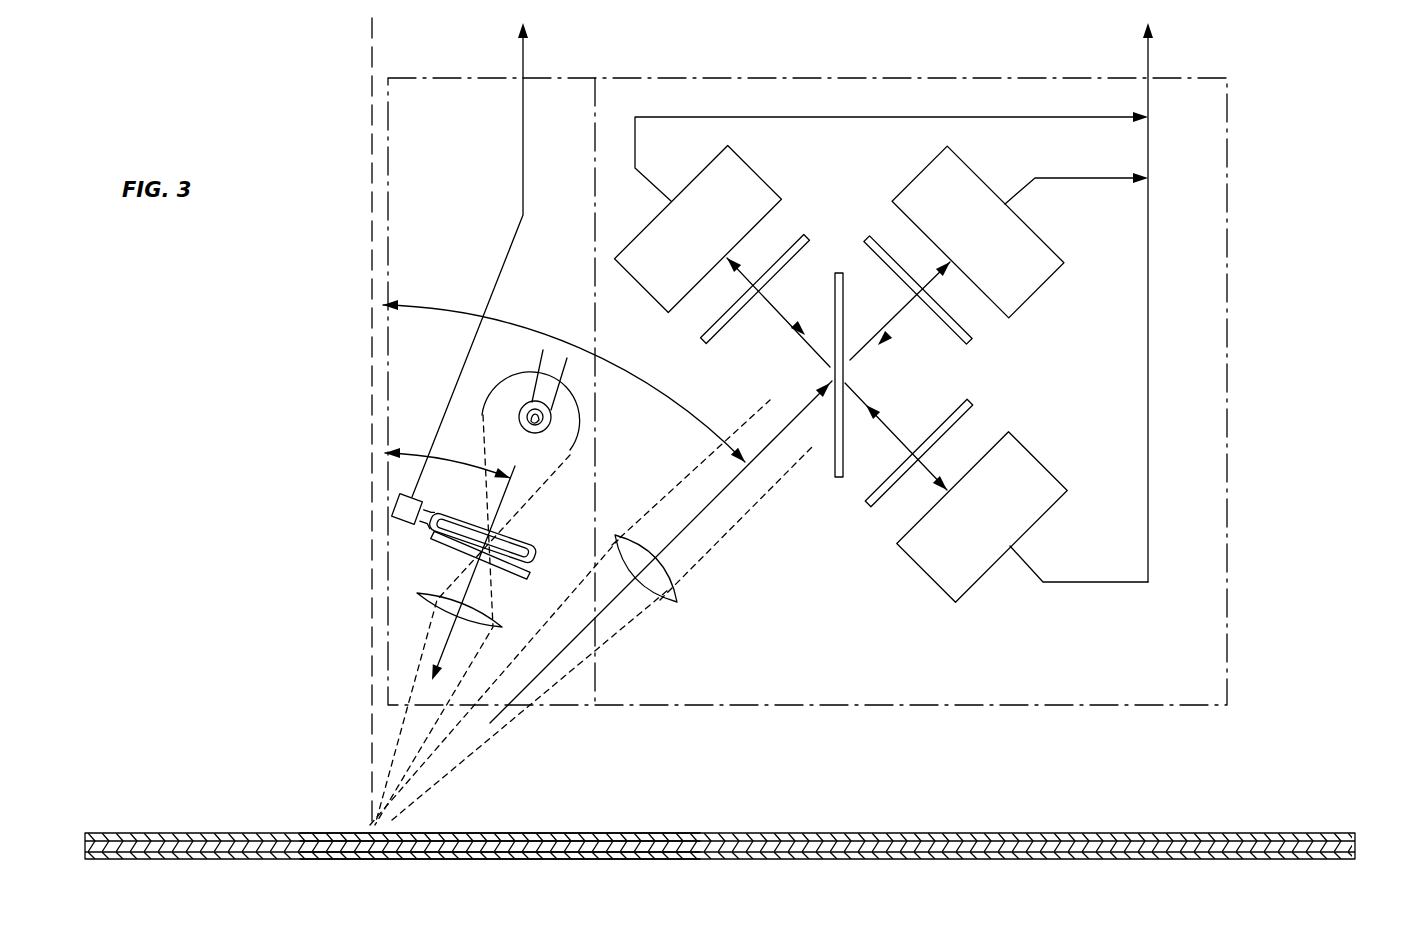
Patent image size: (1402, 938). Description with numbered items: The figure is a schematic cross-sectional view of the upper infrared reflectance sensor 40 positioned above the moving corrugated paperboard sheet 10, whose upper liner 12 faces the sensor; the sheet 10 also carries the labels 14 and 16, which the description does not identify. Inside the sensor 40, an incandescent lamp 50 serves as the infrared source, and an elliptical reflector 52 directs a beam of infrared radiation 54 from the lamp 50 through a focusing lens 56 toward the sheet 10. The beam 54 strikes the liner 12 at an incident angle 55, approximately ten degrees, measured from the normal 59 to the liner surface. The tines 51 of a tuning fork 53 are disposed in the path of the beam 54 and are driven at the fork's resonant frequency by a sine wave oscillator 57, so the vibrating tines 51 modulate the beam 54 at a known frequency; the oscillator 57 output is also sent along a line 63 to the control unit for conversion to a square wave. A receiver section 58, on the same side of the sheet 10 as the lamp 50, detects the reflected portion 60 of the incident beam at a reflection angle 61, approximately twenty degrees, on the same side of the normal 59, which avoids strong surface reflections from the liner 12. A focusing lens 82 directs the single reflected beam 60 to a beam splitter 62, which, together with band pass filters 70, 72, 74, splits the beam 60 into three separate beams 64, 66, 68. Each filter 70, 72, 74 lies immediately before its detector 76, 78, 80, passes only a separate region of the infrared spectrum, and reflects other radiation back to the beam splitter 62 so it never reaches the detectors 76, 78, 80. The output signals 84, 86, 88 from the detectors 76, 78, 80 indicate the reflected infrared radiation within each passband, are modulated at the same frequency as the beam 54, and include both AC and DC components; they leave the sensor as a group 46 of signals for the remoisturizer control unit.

The corrugated paperboard sheet 10 is at (733, 828).
The upper liner 12 is at (833, 832).
The middle layer of web 14 is at (905, 842).
The bottom layer of web 16 is at (975, 863).
The infrared reflectance sensor 40 is at (1240, 639).
The group of signals 46 is at (1150, 70).
The incandescent lamp 50 is at (552, 418).
The tines 51 is at (530, 535).
The elliptical reflector 52 is at (517, 392).
The tuning fork 53 is at (431, 530).
The beam of infrared radiation 54 is at (440, 650).
The incident angle 55 is at (410, 451).
The focusing lens 56 is at (437, 618).
The sine wave oscillator 57 is at (392, 507).
The receiver section 58 is at (1215, 275).
The normal 59 is at (370, 255).
The reflected beam 60 is at (708, 510).
The reflection angle 61 is at (472, 310).
The beam splitter 62 is at (841, 272).
The line 63 is at (520, 52).
The separate beam 64 is at (900, 440).
The separate beam 66 is at (907, 312).
The separate beam 68 is at (792, 330).
The band pass filter 70 is at (880, 508).
The band pass filter 72 is at (973, 338).
The band pass filter 74 is at (705, 337).
The detector 76 is at (940, 597).
The detector 78 is at (1056, 270).
The detector 80 is at (746, 154).
The focusing lens 82 is at (676, 583).
The output signal 84 is at (1085, 582).
The output signal 86 is at (1078, 180).
The output signal 88 is at (869, 124).